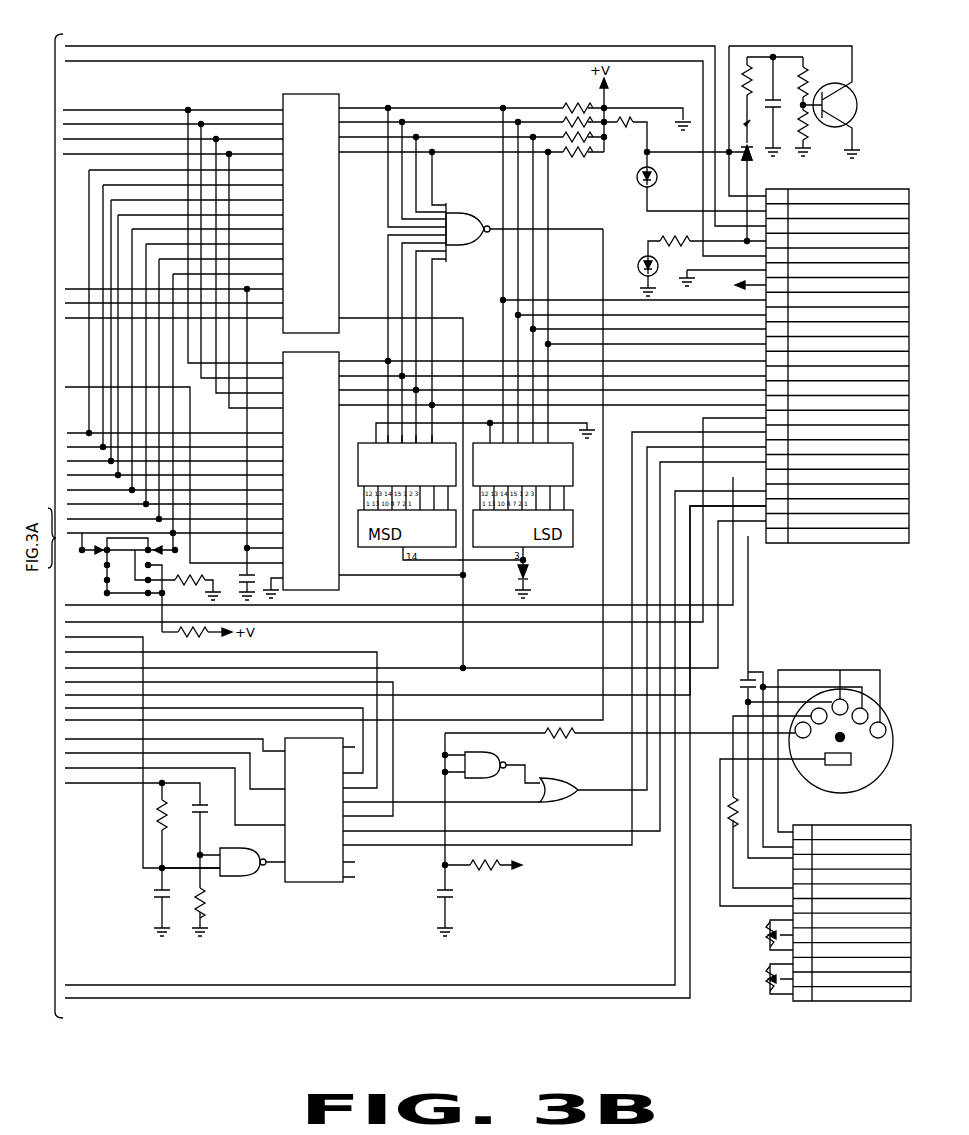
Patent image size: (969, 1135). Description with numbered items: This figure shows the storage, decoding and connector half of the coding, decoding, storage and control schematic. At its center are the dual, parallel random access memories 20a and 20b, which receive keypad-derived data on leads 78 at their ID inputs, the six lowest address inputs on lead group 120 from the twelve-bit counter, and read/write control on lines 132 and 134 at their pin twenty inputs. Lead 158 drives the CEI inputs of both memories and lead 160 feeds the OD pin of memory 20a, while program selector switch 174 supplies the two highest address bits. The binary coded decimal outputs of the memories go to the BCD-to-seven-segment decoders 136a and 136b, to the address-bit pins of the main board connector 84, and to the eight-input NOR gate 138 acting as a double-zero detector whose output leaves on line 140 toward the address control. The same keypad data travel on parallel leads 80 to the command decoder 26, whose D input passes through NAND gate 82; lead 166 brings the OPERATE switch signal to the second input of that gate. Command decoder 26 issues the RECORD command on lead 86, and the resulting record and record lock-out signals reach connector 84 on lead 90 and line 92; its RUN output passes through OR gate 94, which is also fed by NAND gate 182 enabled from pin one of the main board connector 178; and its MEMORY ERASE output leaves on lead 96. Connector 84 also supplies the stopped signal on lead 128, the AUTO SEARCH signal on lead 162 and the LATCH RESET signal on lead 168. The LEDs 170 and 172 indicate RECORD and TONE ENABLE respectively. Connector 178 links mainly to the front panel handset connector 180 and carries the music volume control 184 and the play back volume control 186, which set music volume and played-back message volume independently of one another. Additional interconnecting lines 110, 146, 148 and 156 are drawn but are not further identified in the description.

The random access memory 20a is at (327, 230).
The random access memory 20b is at (327, 492).
The command decoder 26 is at (328, 824).
The leads 78 is at (80, 168).
The parallel leads 80 is at (80, 795).
The NAND gate 82 is at (232, 878).
The main board connector 84 is at (812, 189).
The lead 86 is at (67, 682).
The lead 90 is at (102, 46).
The line 92 is at (163, 61).
The OR gate 94 is at (574, 798).
The lead 96 is at (67, 652).
The control line 110 is at (67, 708).
The lead group 120 is at (80, 525).
The stopped input lead 128 is at (542, 602).
The line 132 is at (67, 387).
The line 134 is at (67, 303).
The decoder 136a is at (543, 477).
The decoder 136b is at (428, 477).
The 00 detector NOR gate 138 is at (484, 200).
The line 140 is at (572, 229).
The play line 146 is at (67, 985).
The no play line 148 is at (67, 998).
The latch reset line 156 is at (67, 668).
The lead 158 is at (67, 289).
The lead 160 is at (67, 318).
The lead 162 is at (67, 622).
The lead 166 is at (67, 637).
The lead 168 is at (67, 695).
The LED 170 is at (655, 174).
The LED 172 is at (652, 262).
The program selector switch 174 is at (96, 586).
The main board connector 178 is at (840, 825).
The front panel handset connector 180 is at (889, 764).
The NAND gate 182 is at (495, 748).
The music volume control 184 is at (768, 943).
The play back volume control 186 is at (766, 980).